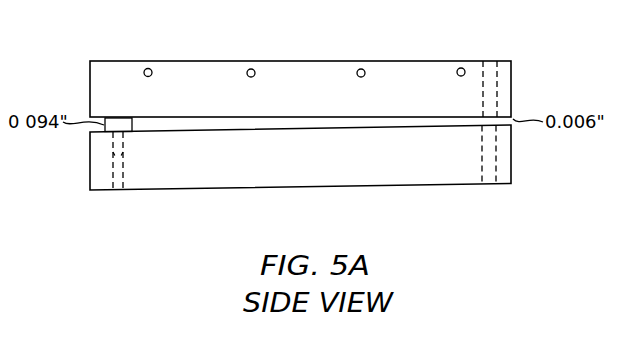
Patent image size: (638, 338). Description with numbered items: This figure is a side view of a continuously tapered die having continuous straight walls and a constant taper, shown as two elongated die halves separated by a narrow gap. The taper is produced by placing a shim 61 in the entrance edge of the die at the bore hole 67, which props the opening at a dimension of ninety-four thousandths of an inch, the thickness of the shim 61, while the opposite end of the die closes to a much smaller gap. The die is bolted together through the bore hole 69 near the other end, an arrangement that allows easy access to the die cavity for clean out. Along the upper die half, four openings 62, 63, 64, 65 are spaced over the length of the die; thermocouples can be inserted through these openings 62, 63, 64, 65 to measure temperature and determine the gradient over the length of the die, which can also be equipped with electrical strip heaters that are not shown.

The shim 61 is at (104, 129).
The thermocouple insertion hole 62 is at (150, 68).
The thermocouple insertion hole 63 is at (253, 69).
The thermocouple insertion hole 64 is at (362, 69).
The thermocouple insertion hole 65 is at (464, 68).
The bore hole 67 is at (121, 190).
The bore hole 69 is at (489, 184).